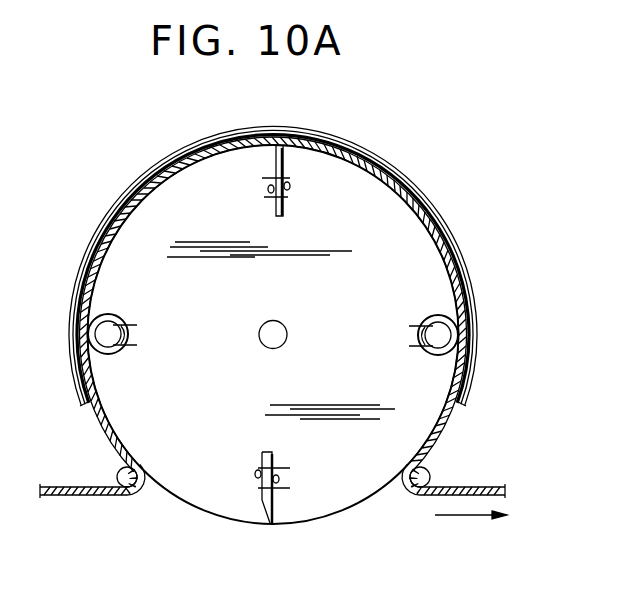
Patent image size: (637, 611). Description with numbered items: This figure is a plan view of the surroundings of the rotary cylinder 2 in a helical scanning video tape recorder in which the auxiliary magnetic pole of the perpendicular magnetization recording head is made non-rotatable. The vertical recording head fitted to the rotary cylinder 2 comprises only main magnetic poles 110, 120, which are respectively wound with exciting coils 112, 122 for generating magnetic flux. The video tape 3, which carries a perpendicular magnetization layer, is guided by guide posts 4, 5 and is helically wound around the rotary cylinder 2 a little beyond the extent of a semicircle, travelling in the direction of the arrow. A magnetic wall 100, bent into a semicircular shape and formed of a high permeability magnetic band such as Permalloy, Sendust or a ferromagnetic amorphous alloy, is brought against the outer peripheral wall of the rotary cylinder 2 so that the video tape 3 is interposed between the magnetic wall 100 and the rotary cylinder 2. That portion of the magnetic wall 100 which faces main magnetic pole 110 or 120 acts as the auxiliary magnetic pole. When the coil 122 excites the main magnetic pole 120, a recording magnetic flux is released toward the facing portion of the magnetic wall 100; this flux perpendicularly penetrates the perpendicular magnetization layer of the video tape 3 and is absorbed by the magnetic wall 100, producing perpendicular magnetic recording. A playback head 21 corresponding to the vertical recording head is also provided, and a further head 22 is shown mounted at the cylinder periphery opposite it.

The rotary cylinder 2 is at (333, 507).
The video tape 3 is at (70, 496).
The guide post 4 is at (115, 472).
The guide post 5 is at (432, 476).
The playback head 21 is at (425, 352).
The roller 22 is at (108, 313).
The magnetic wall 100 is at (377, 151).
The main magnetic pole 110 is at (262, 453).
The exciting coil 112 is at (279, 466).
The main magnetic pole 120 is at (282, 219).
The exciting coil 122 is at (275, 198).